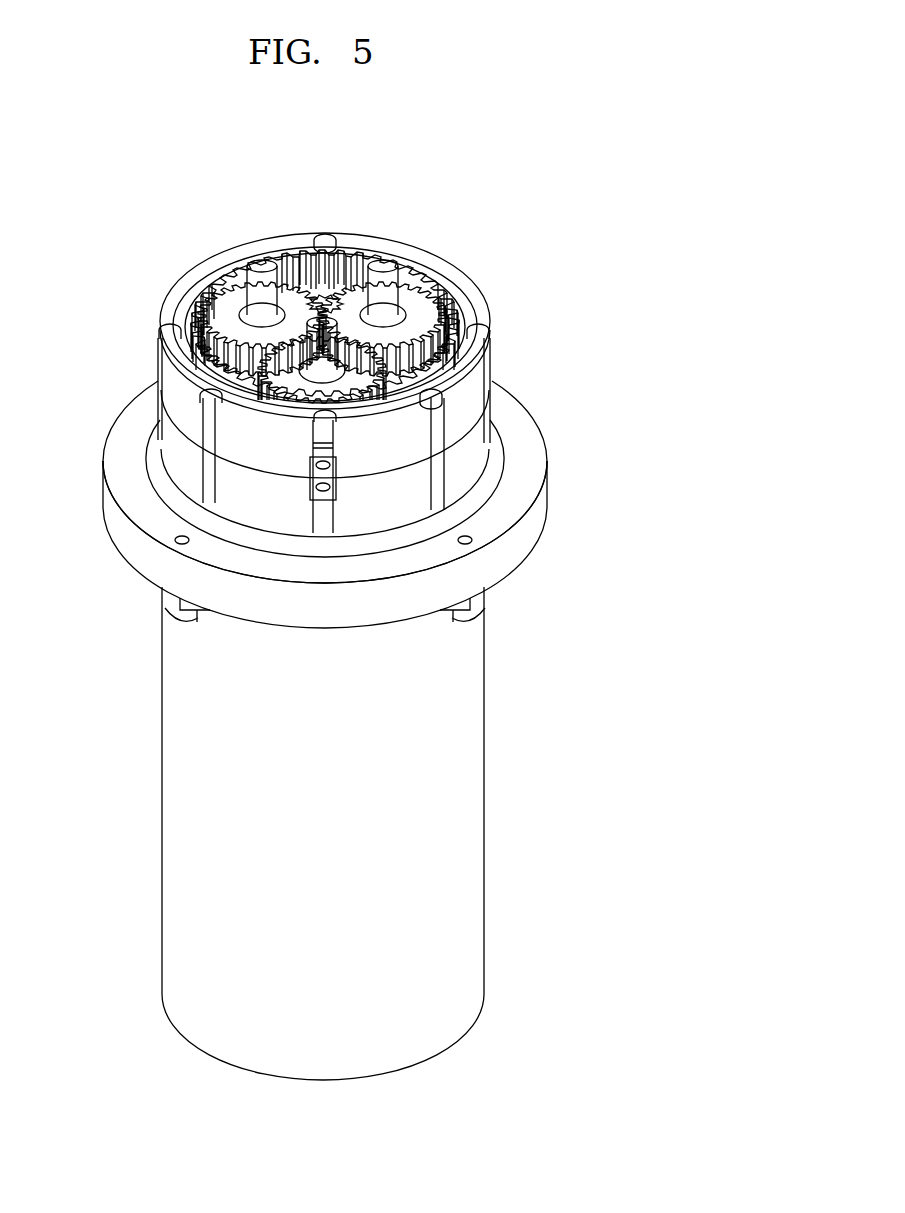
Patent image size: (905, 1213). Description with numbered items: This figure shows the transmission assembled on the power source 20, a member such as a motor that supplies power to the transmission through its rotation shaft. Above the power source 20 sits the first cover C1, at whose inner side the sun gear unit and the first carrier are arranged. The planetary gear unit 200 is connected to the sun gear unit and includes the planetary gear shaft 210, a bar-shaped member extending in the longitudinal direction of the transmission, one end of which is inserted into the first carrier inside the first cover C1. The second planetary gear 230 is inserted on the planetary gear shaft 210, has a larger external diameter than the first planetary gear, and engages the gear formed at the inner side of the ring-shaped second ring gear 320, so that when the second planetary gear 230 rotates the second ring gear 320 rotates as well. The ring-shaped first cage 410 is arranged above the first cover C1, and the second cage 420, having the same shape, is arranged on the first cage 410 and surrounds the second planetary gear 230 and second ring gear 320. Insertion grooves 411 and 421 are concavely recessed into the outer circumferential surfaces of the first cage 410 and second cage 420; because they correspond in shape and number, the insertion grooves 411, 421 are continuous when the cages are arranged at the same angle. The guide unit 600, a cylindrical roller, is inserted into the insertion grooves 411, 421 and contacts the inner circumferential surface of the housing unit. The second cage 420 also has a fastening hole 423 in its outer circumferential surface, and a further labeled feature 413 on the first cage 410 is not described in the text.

The power source 20 is at (465, 755).
The planetary gear unit 200 is at (344, 289).
The planetary gear shaft 210 is at (264, 260).
The second planetary gear 230 is at (413, 312).
The second ring gear 320 is at (452, 312).
The first cage 410 is at (430, 528).
The insertion groove 411 is at (433, 477).
The fastening hole 413 is at (312, 492).
The second cage 420 is at (496, 316).
The insertion groove 421 is at (443, 403).
The fastening hole 423 is at (312, 468).
The guide unit 600 is at (440, 428).
The first cover C1 is at (108, 490).